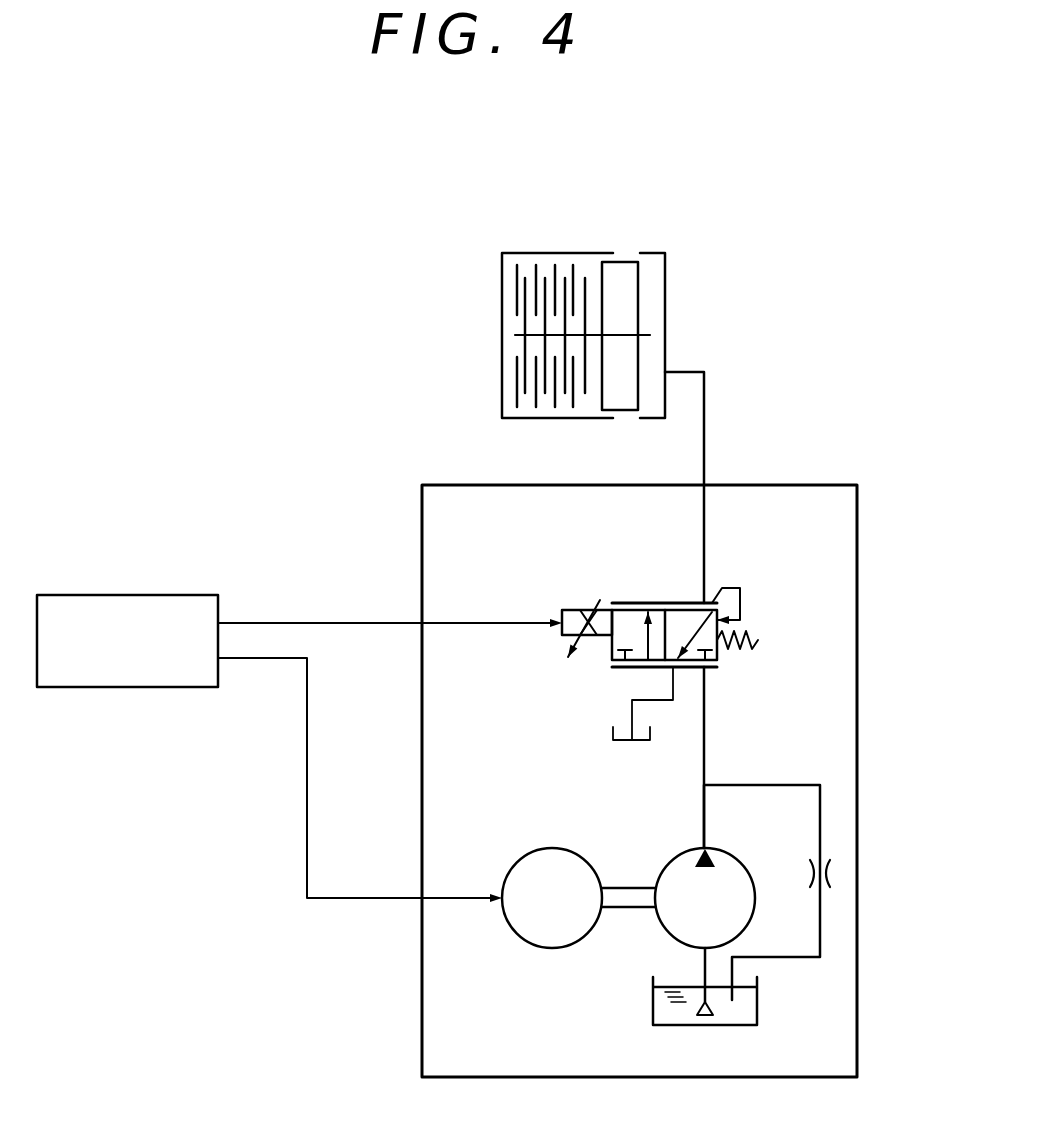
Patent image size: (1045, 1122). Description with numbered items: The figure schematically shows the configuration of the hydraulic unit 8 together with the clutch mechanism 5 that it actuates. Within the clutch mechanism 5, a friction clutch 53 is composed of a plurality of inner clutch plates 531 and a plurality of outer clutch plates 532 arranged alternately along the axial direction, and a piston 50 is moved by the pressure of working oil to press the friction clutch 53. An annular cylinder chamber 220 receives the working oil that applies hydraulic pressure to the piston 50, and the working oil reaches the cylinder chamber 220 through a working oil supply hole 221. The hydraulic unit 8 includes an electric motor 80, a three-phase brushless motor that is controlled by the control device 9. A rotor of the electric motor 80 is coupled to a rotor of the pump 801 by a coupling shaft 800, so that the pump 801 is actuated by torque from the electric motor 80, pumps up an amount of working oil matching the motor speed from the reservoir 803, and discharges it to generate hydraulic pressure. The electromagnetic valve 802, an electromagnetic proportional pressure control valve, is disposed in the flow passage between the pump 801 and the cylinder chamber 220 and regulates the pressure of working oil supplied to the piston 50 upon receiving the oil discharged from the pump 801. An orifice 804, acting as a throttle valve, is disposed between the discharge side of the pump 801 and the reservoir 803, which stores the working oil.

The clutch mechanism 5 is at (584, 302).
The piston 50 is at (618, 262).
The friction clutch 53 is at (501, 309).
The inner clutch plates 531 is at (520, 343).
The outer clutch plates 532 is at (517, 387).
The cylinder chamber 220 is at (655, 287).
The working oil supply hole 221 is at (680, 370).
The hydraulic unit 8 is at (797, 483).
The electromagnetic valve 802 is at (613, 608).
The control device 9 is at (73, 595).
The electric motor 80 is at (540, 847).
The coupling shaft 800 is at (635, 888).
The pump 801 is at (730, 853).
The reservoir 803 is at (757, 1005).
The orifice 804 is at (827, 868).